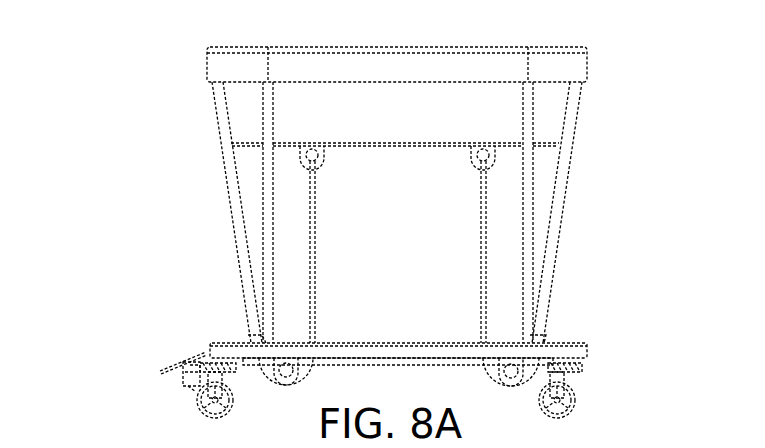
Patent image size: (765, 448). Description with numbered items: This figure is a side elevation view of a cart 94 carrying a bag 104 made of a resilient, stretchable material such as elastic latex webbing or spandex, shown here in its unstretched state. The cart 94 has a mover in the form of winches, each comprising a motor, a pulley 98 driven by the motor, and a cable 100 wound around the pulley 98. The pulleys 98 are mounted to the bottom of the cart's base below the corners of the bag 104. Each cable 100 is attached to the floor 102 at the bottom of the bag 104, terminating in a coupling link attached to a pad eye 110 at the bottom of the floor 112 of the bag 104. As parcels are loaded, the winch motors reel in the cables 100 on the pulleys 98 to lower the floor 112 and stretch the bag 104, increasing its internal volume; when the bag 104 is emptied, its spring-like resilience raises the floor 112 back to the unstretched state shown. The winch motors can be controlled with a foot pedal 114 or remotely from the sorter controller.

The cart 94 is at (150, 75).
The pulley 98 is at (503, 388).
The cable 100 is at (483, 290).
The floor 102 is at (543, 147).
The bag 104 is at (555, 112).
The pad eye 110 is at (308, 163).
The floor 112 is at (358, 146).
The foot pedal 114 is at (183, 360).